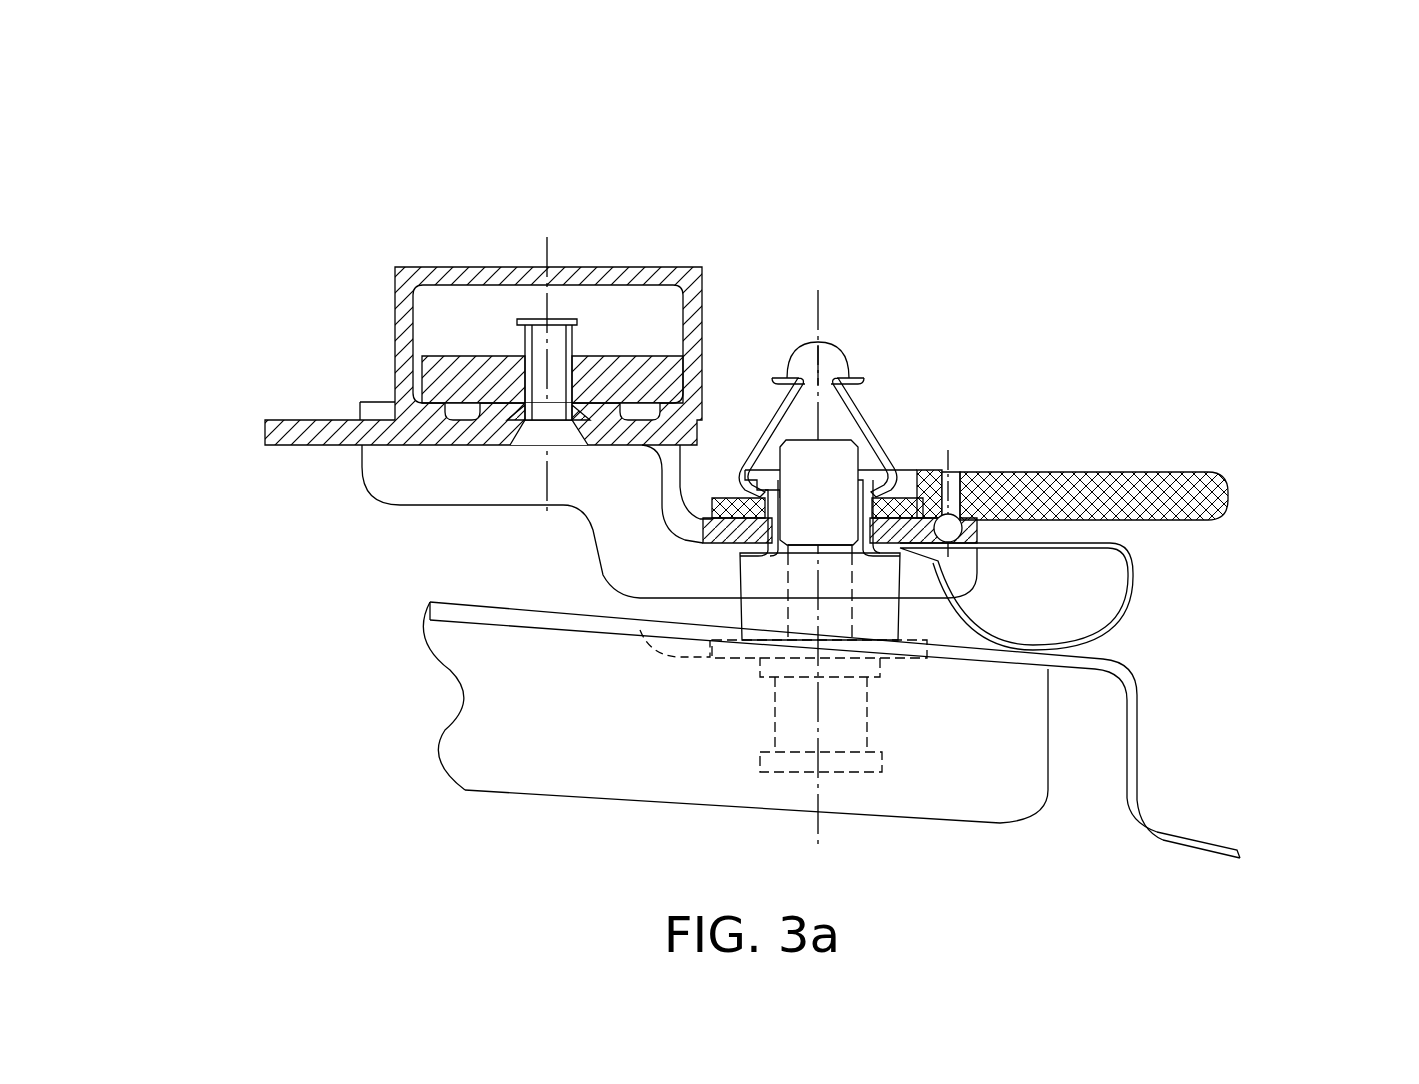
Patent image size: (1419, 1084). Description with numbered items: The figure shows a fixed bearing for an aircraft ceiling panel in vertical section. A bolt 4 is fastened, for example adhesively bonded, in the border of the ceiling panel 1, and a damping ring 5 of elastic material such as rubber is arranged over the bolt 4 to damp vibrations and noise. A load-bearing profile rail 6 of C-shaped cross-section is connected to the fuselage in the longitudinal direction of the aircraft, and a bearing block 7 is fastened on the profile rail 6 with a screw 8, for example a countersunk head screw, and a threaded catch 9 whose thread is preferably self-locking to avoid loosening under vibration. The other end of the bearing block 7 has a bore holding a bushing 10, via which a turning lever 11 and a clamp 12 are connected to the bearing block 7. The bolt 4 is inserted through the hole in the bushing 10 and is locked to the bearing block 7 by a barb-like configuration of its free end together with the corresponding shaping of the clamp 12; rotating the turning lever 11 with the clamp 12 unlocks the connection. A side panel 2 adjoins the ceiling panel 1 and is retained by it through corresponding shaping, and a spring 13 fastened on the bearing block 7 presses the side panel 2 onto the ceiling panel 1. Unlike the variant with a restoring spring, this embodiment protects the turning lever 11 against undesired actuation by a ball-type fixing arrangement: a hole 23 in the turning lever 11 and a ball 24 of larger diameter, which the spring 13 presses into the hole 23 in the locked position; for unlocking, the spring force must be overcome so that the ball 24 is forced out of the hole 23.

The ceiling panel 1 is at (547, 723).
The side panel 2 is at (1168, 842).
The bolt 4 is at (835, 445).
The damping ring 5 is at (877, 580).
The profile rail 6 is at (517, 277).
The bearing block 7 is at (507, 474).
The screw 8 is at (538, 343).
The threaded catch 9 is at (477, 377).
The bushing 10 is at (768, 508).
The turning lever 11 is at (1173, 499).
The clamp 12 is at (877, 442).
The spring 13 is at (1115, 611).
The hole 23 is at (957, 475).
The ball 24 is at (953, 523).